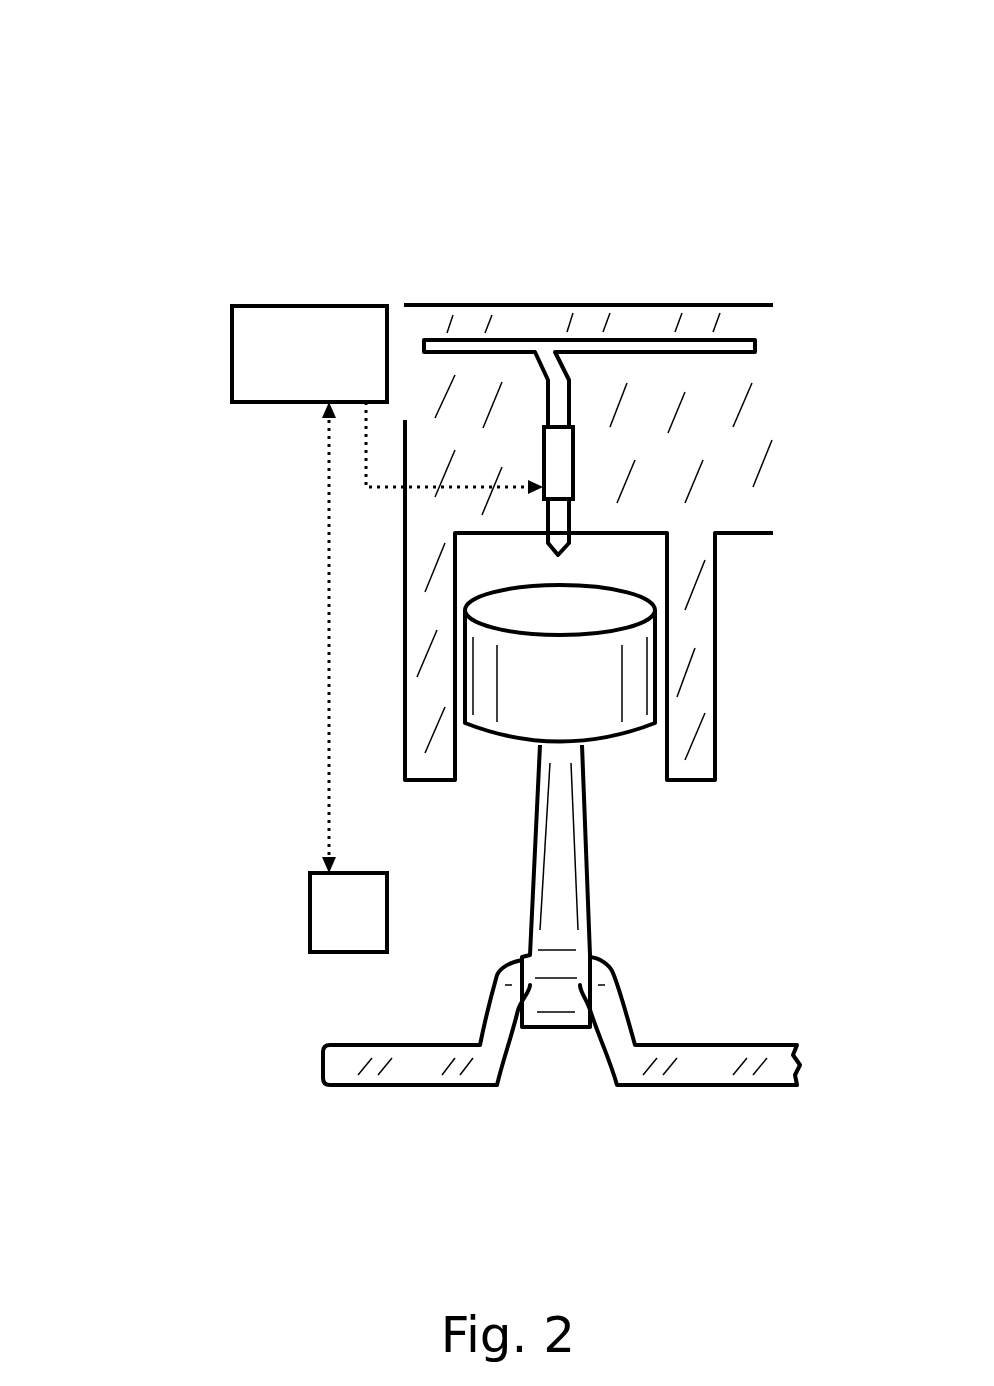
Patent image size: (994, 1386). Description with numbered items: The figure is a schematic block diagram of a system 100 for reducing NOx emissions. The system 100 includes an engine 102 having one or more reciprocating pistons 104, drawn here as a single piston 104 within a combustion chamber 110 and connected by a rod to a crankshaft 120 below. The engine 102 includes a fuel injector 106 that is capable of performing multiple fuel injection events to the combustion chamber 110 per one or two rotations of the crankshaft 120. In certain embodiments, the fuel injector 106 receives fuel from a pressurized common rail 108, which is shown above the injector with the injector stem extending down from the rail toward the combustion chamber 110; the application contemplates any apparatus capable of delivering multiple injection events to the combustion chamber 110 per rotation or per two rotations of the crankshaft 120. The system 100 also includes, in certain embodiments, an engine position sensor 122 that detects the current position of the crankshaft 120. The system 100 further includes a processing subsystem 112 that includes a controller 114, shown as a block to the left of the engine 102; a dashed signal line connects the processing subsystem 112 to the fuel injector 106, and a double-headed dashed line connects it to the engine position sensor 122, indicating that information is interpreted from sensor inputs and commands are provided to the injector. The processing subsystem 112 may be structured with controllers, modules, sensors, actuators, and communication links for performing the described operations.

The system 100 is at (86, 67).
The engine 102 is at (645, 320).
The reciprocating piston 104 is at (605, 745).
The fuel injector 106 is at (565, 458).
The pressurized common rail 108 is at (578, 347).
The combustion chamber 110 is at (627, 562).
The processing subsystem 112 is at (349, 305).
The controller 114 is at (309, 353).
The crankshaft 120 is at (715, 1045).
The engine position sensor 122 is at (310, 903).